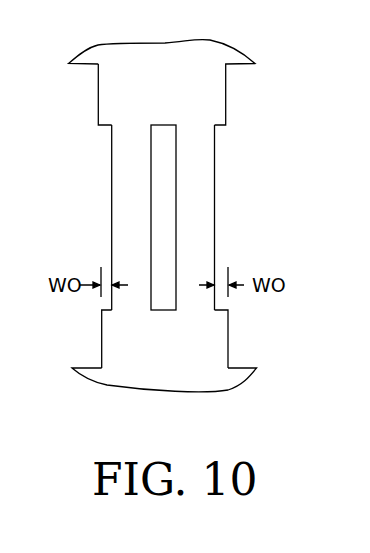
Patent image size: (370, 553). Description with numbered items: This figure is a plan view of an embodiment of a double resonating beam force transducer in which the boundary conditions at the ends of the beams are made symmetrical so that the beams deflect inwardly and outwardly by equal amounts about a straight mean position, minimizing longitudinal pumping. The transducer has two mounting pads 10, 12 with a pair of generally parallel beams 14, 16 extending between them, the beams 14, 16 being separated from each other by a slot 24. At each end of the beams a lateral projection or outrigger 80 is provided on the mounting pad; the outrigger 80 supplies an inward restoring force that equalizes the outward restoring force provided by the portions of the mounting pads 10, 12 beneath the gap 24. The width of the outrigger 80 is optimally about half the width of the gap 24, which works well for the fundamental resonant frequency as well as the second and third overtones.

The mounting pad 10 is at (170, 204).
The mounting pad 12 is at (219, 58).
The beam 14 is at (128, 197).
The beam 16 is at (203, 207).
The slot 24 is at (170, 200).
The outrigger 80 is at (112, 335).